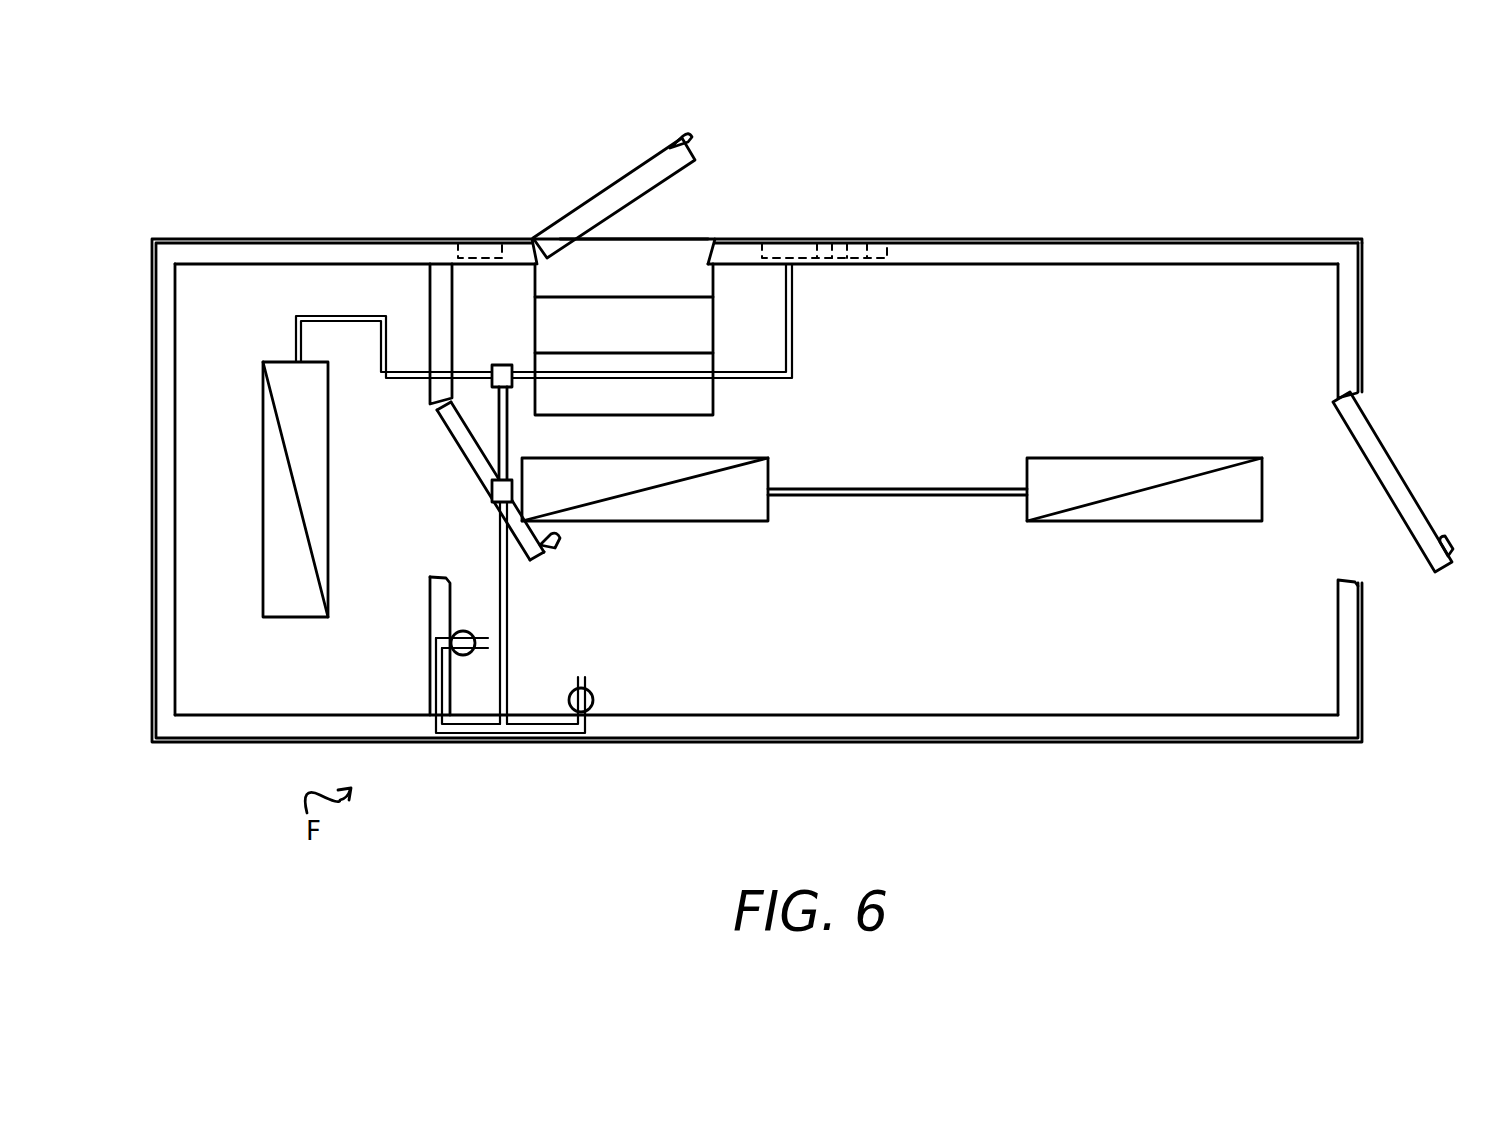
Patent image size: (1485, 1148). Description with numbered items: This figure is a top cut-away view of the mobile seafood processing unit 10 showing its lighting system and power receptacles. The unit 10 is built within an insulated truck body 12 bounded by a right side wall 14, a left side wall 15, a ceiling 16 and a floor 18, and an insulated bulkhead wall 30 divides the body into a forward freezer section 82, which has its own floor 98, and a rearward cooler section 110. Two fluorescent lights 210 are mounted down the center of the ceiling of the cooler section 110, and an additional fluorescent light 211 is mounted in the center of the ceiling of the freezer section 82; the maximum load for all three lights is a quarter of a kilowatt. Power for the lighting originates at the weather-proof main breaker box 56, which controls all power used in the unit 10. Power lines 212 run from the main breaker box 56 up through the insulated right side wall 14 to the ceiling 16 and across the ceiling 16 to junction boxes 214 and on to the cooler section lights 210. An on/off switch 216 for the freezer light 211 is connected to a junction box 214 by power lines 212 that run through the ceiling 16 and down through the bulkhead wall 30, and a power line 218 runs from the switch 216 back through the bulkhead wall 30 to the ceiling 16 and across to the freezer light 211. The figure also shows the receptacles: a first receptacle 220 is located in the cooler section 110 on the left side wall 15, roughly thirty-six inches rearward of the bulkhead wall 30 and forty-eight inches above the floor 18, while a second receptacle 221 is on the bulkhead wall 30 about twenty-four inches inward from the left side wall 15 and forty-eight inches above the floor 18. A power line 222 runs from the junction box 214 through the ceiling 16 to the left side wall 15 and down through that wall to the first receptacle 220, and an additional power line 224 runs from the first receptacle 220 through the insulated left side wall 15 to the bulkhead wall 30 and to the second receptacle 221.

The mobile seafood processing unit 10 is at (967, 195).
The insulated truck body 12 is at (1078, 287).
The right side wall 14 is at (997, 252).
The left side wall 15 is at (763, 730).
The ceiling 16 is at (1127, 328).
The floor 18 is at (1052, 663).
The bulkhead wall 30 is at (433, 283).
The main breaker box 56 is at (800, 248).
The freezer section 82 is at (223, 702).
The floor of freezer section 98 is at (380, 418).
The cooler section 110 is at (1098, 685).
The fluorescent lights 210 is at (665, 523).
The fluorescent light 211 is at (273, 580).
The power lines 212 is at (793, 330).
The junction boxes 214 is at (510, 437).
The on/off switch 216 is at (475, 378).
The power line 218 is at (353, 315).
The first receptacle 220 is at (595, 700).
The second receptacle 221 is at (460, 655).
The power line 222 is at (507, 628).
The additional power line 224 is at (533, 720).